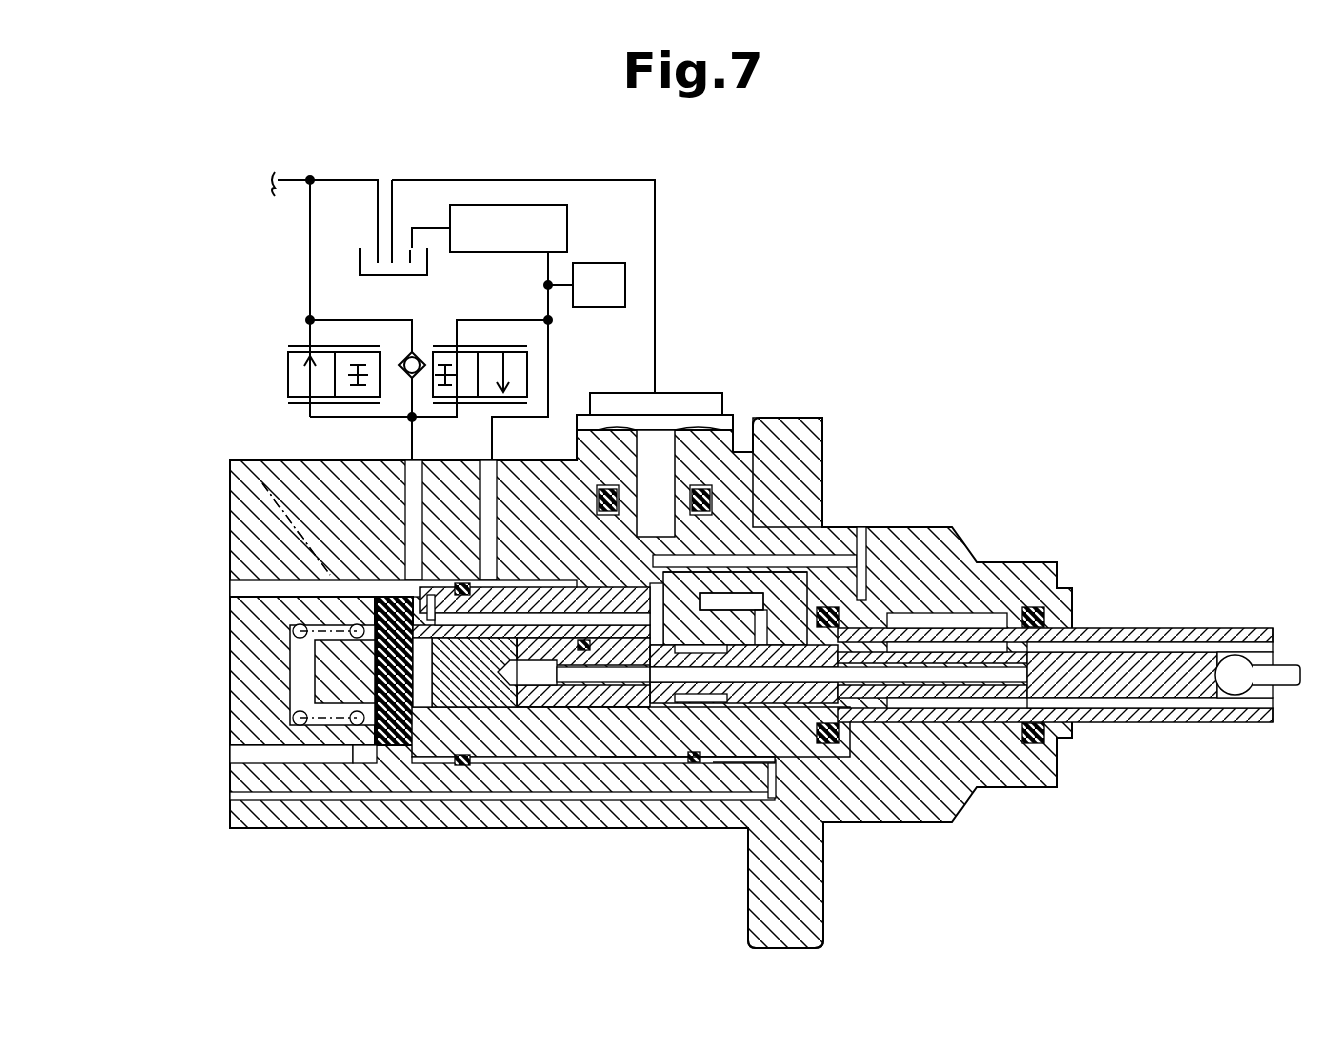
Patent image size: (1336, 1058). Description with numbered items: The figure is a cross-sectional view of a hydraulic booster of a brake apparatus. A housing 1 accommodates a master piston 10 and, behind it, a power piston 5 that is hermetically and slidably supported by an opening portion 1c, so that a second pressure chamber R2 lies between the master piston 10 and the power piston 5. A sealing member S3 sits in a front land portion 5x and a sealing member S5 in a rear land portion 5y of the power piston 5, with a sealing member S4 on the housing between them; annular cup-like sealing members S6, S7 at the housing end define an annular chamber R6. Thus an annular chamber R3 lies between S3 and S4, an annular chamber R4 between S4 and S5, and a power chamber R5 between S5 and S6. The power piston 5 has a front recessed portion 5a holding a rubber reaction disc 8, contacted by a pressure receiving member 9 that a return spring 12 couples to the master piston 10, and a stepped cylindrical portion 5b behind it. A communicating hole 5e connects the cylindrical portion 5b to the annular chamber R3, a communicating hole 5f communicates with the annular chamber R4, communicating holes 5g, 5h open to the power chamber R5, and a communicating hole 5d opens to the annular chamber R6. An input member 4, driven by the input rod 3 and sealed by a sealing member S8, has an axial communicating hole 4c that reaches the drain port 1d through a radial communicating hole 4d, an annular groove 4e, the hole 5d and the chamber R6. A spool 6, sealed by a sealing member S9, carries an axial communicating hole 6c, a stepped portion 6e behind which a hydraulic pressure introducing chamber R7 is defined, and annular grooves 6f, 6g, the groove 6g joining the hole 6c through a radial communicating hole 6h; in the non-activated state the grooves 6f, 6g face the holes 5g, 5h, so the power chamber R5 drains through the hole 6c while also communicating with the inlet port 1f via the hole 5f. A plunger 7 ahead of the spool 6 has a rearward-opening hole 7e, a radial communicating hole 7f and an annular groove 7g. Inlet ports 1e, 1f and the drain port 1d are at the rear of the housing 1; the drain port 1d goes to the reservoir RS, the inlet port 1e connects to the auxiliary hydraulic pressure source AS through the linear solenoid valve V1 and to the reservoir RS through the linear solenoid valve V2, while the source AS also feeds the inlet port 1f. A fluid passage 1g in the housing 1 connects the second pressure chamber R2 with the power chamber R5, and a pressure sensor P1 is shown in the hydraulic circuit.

The housing 1 is at (232, 545).
The opening portion 1c is at (1083, 745).
The drain port 1d is at (862, 560).
The inlet port 1e is at (410, 468).
The inlet port 1f is at (497, 470).
The fluid passage 1g is at (265, 798).
The input rod 3 is at (1280, 686).
The input member 4 is at (950, 742).
The communicating hole 4c is at (930, 700).
The communicating hole 4d is at (1065, 652).
The annular groove 4e is at (1042, 630).
The power piston 5 is at (437, 770).
The recessed portion 5a is at (400, 722).
The cylindrical portion 5b is at (1188, 714).
The communicating hole 5d is at (1000, 622).
The communicating hole 5e is at (448, 590).
The communicating hole 5f is at (655, 537).
The communicating hole 5g is at (750, 585).
The communicating hole 5h is at (790, 560).
The land portion 5x is at (345, 748).
The land portion 5y is at (720, 605).
The spool 6 is at (580, 560).
The communicating hole 6c is at (770, 635).
The stepped portion 6e is at (640, 775).
The annular groove 6f is at (710, 792).
The annular groove 6g is at (823, 880).
The communicating hole 6h is at (790, 825).
The plunger 7 is at (470, 692).
The hole 7e is at (570, 710).
The communicating hole 7f is at (527, 762).
The annular groove 7g is at (522, 710).
The reaction disc 8 is at (340, 690).
The pressure receiving member 9 is at (293, 633).
The master piston 10 is at (235, 630).
The return spring 12 is at (290, 520).
The second pressure chamber R2 is at (255, 750).
The annular chamber R3 is at (422, 708).
The annular chamber R4 is at (580, 772).
The power chamber R5 is at (723, 767).
The annular chamber R6 is at (975, 615).
The hydraulic pressure introducing chamber R7 is at (645, 802).
The sealing member S3 is at (380, 745).
The sealing member S4 is at (462, 768).
The sealing member S5 is at (692, 765).
The sealing member S6 is at (828, 745).
The sealing member S7 is at (1035, 747).
The sealing member S8 is at (1112, 707).
The sealing member S9 is at (584, 640).
The auxiliary hydraulic pressure source AS is at (489, 228).
The pressure sensor P1 is at (599, 285).
The reservoir RS is at (390, 278).
The linear solenoid valve V1 is at (468, 402).
The linear solenoid valve V2 is at (288, 362).